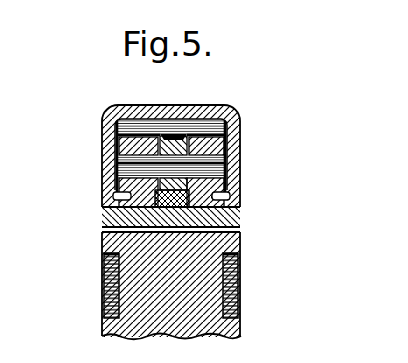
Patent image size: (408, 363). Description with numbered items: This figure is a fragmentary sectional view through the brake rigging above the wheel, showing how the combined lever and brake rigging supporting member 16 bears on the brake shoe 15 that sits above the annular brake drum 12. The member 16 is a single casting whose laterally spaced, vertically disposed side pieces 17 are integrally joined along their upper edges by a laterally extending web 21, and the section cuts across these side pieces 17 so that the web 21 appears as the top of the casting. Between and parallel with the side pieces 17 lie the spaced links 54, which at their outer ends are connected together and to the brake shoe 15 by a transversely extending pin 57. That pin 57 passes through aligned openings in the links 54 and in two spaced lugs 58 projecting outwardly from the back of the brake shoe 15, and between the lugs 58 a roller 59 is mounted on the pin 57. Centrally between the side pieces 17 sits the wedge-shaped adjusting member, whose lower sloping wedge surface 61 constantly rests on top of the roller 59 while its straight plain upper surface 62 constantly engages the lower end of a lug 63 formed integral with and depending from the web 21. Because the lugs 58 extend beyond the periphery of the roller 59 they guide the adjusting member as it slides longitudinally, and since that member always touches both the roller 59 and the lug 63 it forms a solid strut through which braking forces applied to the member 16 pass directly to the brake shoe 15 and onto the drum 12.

The brake drum 12 is at (104, 233).
The brake shoe 15 is at (242, 227).
The combined lever and brake rigging supporting member 16 is at (113, 114).
The side pieces 17 is at (116, 134).
The web 21 is at (200, 117).
The links 54 is at (113, 188).
The pin 57 is at (226, 164).
The lugs 58 is at (117, 153).
The roller 59 is at (229, 190).
The wedge surface 61 is at (212, 143).
The upper surface 62 is at (222, 108).
The lug 63 is at (140, 108).